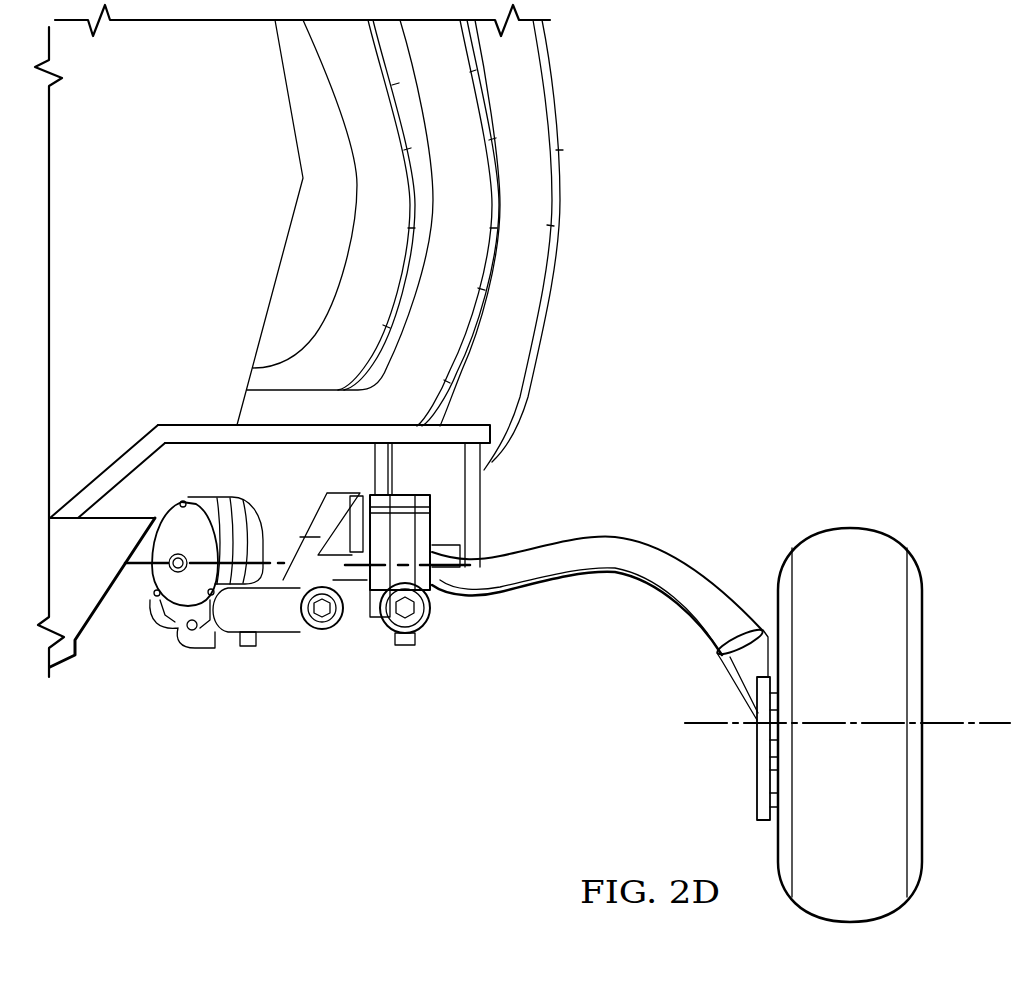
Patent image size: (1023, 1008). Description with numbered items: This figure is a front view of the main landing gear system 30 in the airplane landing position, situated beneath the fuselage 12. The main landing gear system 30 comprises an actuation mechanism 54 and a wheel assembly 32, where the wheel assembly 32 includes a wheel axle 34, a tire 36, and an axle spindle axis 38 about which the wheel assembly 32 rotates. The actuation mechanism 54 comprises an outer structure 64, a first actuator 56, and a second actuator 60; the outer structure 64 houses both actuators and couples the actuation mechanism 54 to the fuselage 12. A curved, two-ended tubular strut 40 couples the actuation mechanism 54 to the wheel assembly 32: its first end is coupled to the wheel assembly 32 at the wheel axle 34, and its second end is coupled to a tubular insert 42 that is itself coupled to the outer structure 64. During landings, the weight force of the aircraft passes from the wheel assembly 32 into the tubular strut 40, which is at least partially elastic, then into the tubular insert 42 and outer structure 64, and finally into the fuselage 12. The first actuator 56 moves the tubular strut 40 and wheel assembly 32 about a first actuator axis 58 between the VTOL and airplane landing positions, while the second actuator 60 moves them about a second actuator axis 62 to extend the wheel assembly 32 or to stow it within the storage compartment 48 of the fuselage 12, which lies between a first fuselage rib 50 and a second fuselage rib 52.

The fuselage 12 is at (658, 175).
The main landing gear system 30 is at (820, 369).
The wheel assembly 32 is at (957, 785).
The wheel axle 34 is at (922, 682).
The tire 36 is at (878, 535).
The axle spindle axis 38 is at (990, 723).
The tubular strut 40 is at (637, 541).
The tubular insert 42 is at (432, 513).
The storage compartment 48 is at (503, 133).
The first fuselage rib 50 is at (456, 72).
The second fuselage rib 52 is at (545, 185).
The actuation mechanism 54 is at (547, 498).
The first actuator 56 is at (434, 628).
The first actuator axis 58 is at (446, 554).
The second actuator 60 is at (282, 630).
The second actuator axis 62 is at (150, 561).
The outer structure 64 is at (478, 432).